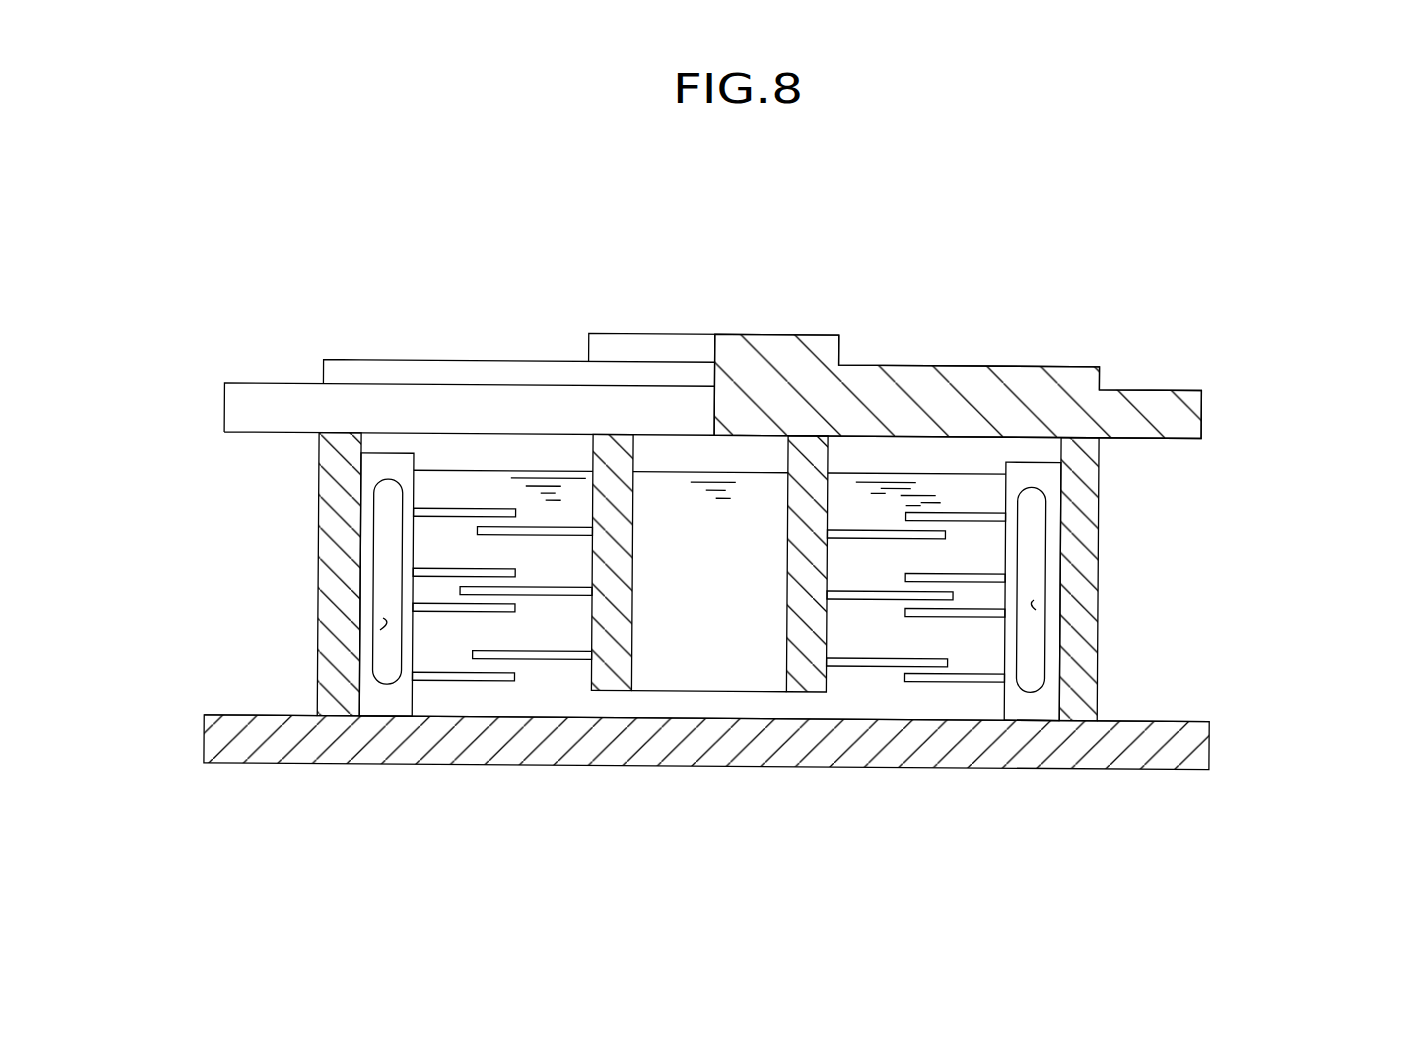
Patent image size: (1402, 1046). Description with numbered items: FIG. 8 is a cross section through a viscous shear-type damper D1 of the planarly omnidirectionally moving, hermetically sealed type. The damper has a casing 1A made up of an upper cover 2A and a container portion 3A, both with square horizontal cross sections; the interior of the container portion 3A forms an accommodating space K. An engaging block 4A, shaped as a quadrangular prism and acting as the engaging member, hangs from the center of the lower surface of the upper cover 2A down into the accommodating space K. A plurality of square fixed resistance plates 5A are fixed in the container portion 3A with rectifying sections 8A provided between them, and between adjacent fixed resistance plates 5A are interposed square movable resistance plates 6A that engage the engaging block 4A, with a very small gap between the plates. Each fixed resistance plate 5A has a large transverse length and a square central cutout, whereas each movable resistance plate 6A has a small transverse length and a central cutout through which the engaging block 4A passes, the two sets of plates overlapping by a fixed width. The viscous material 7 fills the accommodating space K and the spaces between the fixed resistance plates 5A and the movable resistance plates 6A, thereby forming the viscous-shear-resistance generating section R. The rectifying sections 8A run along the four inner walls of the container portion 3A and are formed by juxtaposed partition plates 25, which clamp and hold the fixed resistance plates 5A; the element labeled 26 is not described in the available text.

The viscous shear-type damper D1 is at (1010, 240).
The casing 1A is at (1318, 255).
The upper cover 2A is at (557, 358).
The container portion 3A is at (316, 502).
The engaging block 4A is at (838, 637).
The fixed resistance plates 5A is at (458, 570).
The movable resistance plates 6A is at (560, 590).
The viscous material 7 is at (520, 477).
The rectifying sections 8A is at (385, 449).
The accommodating space K is at (880, 450).
The partition plates 25 is at (377, 703).
The slot opening 26 is at (383, 618).
The viscous-shear-resistance generating section R is at (956, 645).